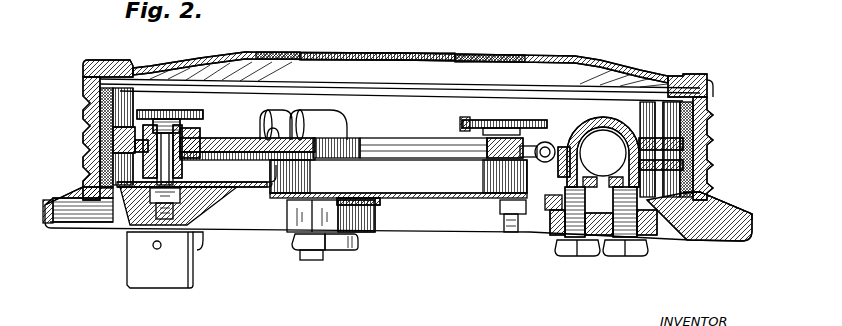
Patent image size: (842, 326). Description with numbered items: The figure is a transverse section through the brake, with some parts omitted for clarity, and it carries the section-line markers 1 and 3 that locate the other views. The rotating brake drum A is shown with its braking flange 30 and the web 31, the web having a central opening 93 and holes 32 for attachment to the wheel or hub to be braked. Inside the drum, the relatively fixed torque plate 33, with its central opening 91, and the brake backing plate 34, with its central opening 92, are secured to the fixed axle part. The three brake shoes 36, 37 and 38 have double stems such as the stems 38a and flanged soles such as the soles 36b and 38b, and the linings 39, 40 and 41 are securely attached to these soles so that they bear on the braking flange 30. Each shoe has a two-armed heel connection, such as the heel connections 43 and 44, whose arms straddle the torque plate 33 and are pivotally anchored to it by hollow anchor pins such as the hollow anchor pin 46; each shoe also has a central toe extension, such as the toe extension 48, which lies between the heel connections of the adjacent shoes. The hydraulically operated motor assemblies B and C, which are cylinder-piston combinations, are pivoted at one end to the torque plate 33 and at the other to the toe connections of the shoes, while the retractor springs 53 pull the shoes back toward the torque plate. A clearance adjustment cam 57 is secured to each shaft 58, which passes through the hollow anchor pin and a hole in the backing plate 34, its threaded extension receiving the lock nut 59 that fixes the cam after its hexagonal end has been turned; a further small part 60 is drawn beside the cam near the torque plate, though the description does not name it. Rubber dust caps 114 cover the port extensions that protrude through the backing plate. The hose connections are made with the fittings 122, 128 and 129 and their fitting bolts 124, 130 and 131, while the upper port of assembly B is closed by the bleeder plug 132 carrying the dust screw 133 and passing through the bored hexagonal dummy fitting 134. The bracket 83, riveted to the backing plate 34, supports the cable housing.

The section line 1- 1 is at (30, 40).
The section line 3- 3 is at (67, 287).
The brake drum A is at (709, 78).
The motor assembly B is at (343, 113).
The motor assembly C is at (588, 122).
The braking flange 30 is at (713, 127).
The web 31 is at (604, 63).
The holes 32 is at (262, 52).
The torque plate 33 is at (218, 150).
The brake backing plate 34 is at (722, 243).
The brake shoe 36 is at (107, 142).
The sole 36b is at (113, 178).
The brake shoe 37 is at (395, 107).
The brake shoe 38 is at (713, 112).
The stems 38a is at (683, 165).
The sole 38b is at (713, 190).
The lining 39 is at (107, 124).
The lining 40 is at (152, 93).
The lining 41 is at (697, 177).
The heel connection 43 is at (193, 143).
The heel connection 44 is at (560, 158).
The hollow anchor pin 46 is at (166, 170).
The toe extension 48 is at (150, 160).
The retractor spring 53 is at (556, 144).
The clearance adjustment cam 57 is at (199, 117).
The shaft 58 is at (181, 184).
The lock nut 59 is at (176, 200).
The lever 60 is at (465, 126).
The bracket 83 is at (163, 278).
The central opening 91 is at (392, 140).
The central opening 92 is at (422, 160).
The central opening 93 is at (442, 56).
The rubber dust cap 114 is at (353, 194).
The fitting 122 is at (550, 237).
The fitting bolt 124 is at (580, 248).
The fitting 128 is at (657, 238).
The fitting 129 is at (360, 223).
The fitting bolt 130 is at (633, 254).
The fitting bolt 131 is at (359, 243).
The bleeder plug 132 is at (296, 242).
The dust screw 133 is at (305, 255).
The dummy fitting 134 is at (300, 219).